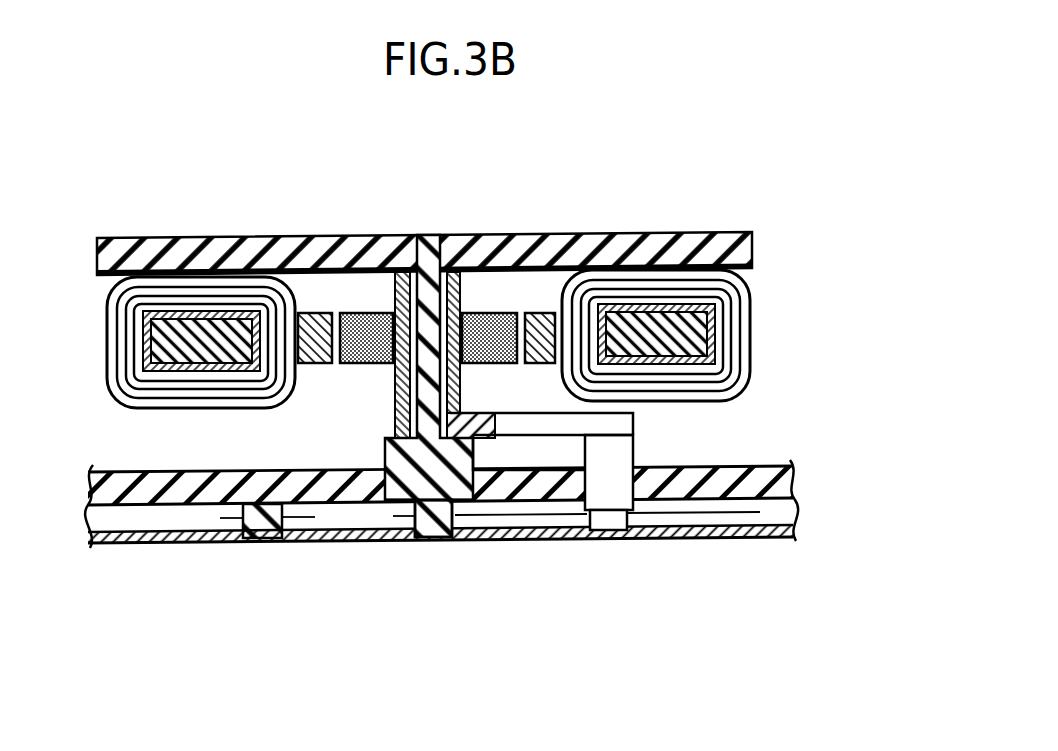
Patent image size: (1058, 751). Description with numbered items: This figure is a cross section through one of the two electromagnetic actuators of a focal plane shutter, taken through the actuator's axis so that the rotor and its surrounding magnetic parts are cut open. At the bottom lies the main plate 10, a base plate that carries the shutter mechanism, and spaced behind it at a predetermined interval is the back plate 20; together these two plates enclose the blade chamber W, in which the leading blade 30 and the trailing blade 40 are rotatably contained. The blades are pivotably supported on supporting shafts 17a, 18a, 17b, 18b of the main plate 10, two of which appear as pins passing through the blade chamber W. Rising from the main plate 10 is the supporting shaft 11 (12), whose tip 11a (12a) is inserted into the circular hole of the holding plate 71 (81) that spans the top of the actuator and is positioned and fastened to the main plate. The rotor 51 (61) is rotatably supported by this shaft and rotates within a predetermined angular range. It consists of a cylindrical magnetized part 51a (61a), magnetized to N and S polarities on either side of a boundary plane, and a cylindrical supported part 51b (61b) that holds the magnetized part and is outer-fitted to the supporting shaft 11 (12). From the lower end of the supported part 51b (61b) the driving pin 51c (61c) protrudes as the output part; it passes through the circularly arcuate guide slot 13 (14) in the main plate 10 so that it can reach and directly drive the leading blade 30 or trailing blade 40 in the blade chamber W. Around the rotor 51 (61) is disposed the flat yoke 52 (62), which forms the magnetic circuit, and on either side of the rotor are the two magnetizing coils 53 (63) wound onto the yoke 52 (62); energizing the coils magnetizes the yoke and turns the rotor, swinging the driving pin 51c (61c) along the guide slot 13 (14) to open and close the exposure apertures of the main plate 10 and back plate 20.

The main plate 10 is at (756, 459).
The supporting shaft 11 is at (436, 329).
The supporting shaft 12 is at (378, 262).
The tip of supporting shaft 11a is at (449, 350).
The tip of supporting shaft 12a is at (418, 248).
The guide slot 13 is at (584, 457).
The guide slot 14 is at (638, 470).
The supporting shaft 17a is at (460, 556).
The supporting shaft 18a is at (442, 540).
The supporting shaft 17b is at (281, 558).
The supporting shaft 18b is at (262, 539).
The back plate 20 is at (766, 542).
The leading blade 30 is at (490, 558).
The trailing blade 40 is at (681, 524).
The rotor 51 is at (421, 264).
The rotor 61 is at (356, 304).
The magnetized part 51a is at (503, 303).
The magnetized part 61a is at (486, 318).
The supported part 51b is at (348, 363).
The supported part 61b is at (396, 392).
The driving pin 51c is at (636, 572).
The driving pin 61c is at (617, 528).
The yoke 52 is at (450, 381).
The yoke 62 is at (160, 356).
The magnetizing coil 53 is at (448, 305).
The magnetizing coil 63 is at (110, 297).
The holding plate 71 is at (424, 218).
The holding plate 81 is at (615, 232).
The blade chamber W is at (148, 518).